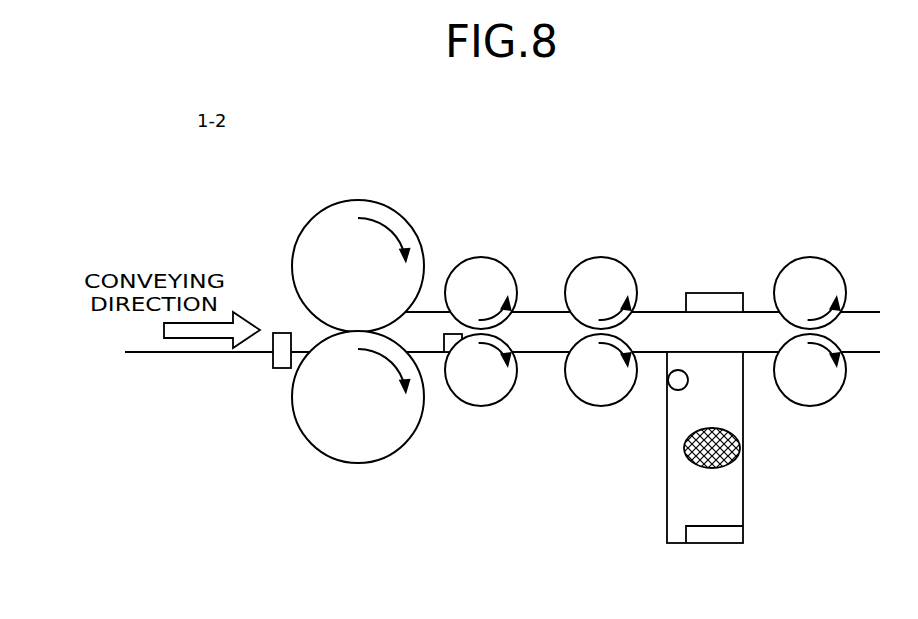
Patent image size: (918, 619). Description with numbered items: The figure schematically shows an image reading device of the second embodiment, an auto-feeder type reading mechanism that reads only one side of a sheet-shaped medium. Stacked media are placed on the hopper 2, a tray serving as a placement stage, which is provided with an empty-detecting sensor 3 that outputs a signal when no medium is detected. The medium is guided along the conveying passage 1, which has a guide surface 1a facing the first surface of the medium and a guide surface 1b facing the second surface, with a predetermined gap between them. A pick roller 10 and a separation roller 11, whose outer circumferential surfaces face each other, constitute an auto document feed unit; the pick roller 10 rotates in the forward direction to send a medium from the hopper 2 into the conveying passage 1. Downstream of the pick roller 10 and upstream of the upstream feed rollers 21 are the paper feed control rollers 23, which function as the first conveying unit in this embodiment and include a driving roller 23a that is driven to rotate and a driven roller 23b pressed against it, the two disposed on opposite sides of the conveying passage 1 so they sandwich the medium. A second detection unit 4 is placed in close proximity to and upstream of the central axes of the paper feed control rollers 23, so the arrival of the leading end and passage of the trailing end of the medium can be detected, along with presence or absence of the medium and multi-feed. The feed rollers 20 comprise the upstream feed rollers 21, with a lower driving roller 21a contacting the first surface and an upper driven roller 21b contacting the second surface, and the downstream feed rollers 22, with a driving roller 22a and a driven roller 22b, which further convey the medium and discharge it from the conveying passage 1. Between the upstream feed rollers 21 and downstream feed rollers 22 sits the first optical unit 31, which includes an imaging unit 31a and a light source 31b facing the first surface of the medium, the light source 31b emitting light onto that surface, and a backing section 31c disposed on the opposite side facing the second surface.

The conveying passage 1 is at (513, 321).
The guide surface 1a is at (880, 352).
The guide surface 1b is at (881, 312).
The hopper 2 is at (172, 353).
The empty-detecting sensor 3 is at (282, 368).
The second detection unit 4 is at (444, 345).
The pick roller 10 is at (362, 463).
The separation roller 11 is at (370, 200).
The feed rollers 20 is at (724, 322).
The upstream feed rollers 21 is at (621, 322).
The driving roller 21a is at (608, 406).
The driven roller 21b is at (592, 257).
The downstream feed rollers 22 is at (831, 322).
The driving roller 22a is at (815, 406).
The driven roller 22b is at (840, 266).
The paper feed control rollers 23 is at (479, 323).
The driving roller 23a is at (487, 406).
The driven roller 23b is at (490, 257).
The first optical unit 31 is at (706, 424).
The imaging unit 31a is at (724, 466).
The light source 31b is at (678, 391).
The backing section 31c is at (722, 293).